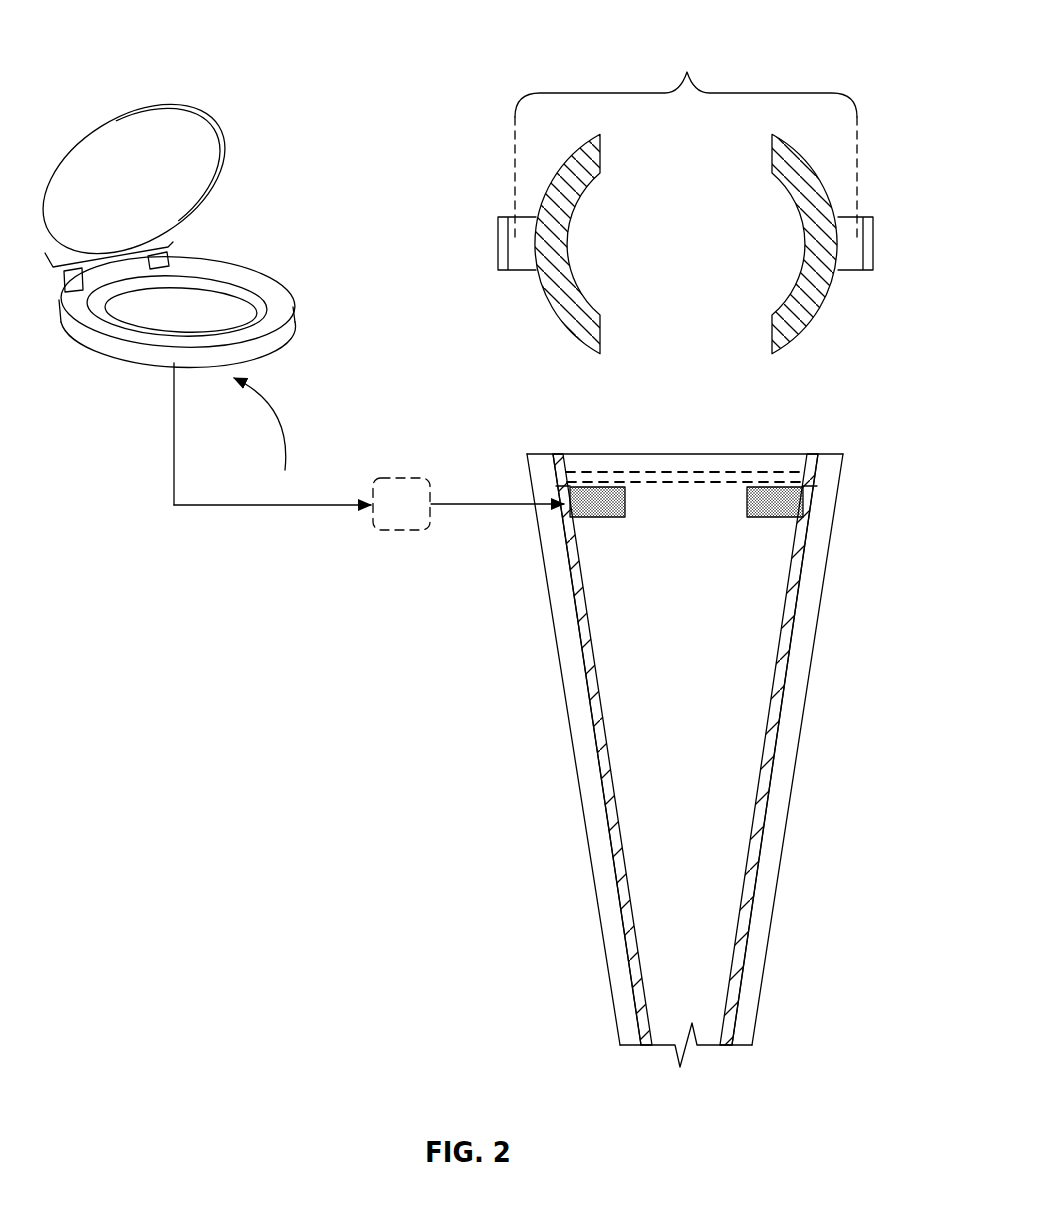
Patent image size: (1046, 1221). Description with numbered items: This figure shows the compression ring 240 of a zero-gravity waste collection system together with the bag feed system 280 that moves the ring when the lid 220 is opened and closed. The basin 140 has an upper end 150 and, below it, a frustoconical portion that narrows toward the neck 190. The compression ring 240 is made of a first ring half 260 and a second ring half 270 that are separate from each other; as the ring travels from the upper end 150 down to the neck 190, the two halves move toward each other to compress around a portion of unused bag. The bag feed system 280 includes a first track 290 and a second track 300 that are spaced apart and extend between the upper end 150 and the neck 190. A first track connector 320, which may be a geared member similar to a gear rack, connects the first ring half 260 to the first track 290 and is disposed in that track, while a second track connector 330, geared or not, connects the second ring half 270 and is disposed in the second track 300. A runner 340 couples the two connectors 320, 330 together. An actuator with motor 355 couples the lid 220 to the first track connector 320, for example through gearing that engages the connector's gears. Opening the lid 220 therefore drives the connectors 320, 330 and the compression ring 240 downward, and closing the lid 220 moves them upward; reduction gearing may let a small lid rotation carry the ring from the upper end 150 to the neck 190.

The basin 140 is at (767, 950).
The upper end 150 is at (830, 453).
The neck 190 is at (660, 1047).
The lid 220 is at (207, 165).
The compression ring 240 is at (828, 172).
The first ring half 260 is at (565, 329).
The second ring half 270 is at (823, 317).
The bag feed system 280 is at (150, 82).
The first track 290 is at (575, 626).
The second track 300 is at (770, 780).
The first track connector 320 is at (497, 238).
The second track connector 330 is at (874, 240).
The runner 340 is at (686, 139).
The first actuator 355 is at (405, 534).